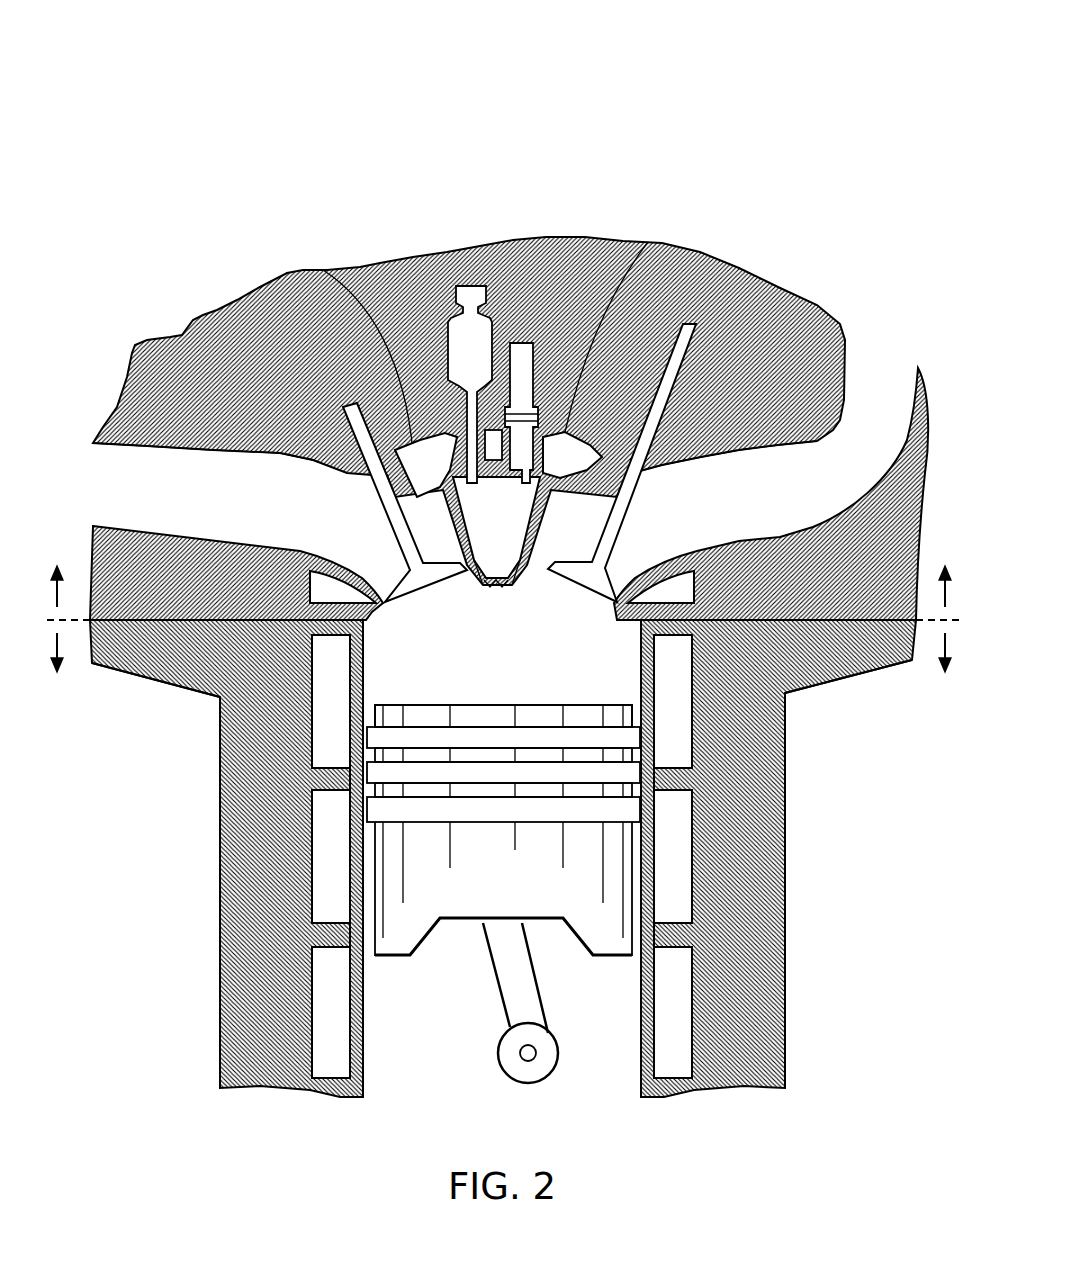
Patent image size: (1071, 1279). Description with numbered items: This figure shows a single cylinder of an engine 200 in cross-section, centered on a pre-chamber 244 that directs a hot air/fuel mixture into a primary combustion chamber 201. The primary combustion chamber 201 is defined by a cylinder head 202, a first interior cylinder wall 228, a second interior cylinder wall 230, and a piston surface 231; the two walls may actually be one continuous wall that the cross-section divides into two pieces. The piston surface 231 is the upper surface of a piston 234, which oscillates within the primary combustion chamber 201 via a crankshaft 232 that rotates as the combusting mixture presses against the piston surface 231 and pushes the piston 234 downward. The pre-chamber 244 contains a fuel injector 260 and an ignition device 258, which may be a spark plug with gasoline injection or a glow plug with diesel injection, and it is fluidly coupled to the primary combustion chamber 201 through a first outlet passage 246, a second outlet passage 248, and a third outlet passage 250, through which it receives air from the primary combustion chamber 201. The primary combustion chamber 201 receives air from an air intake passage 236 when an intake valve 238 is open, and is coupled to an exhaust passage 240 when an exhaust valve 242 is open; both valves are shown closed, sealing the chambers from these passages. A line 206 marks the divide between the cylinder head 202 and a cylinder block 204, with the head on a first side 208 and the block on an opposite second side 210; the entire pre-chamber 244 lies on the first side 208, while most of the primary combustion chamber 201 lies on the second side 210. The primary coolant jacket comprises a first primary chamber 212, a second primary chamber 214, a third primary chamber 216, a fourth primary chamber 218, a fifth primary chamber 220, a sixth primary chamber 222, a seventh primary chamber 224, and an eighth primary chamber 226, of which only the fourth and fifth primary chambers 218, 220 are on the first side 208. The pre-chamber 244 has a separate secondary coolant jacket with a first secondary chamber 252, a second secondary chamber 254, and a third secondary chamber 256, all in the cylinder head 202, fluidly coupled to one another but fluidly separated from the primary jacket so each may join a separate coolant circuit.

The engine 200 is at (503, 576).
The primary combustion chamber 201 is at (518, 684).
The cylinder head 202 is at (173, 336).
The cylinder block 204 is at (220, 870).
The line 206 is at (82, 623).
The first side 208 is at (67, 603).
The second side 210 is at (80, 630).
The first primary chamber 212 is at (303, 1065).
The second primary chamber 214 is at (308, 888).
The third primary chamber 216 is at (310, 752).
The fourth primary chamber 218 is at (308, 578).
The fifth primary chamber 220 is at (700, 578).
The sixth primary chamber 222 is at (695, 752).
The seventh primary chamber 224 is at (696, 885).
The eighth primary chamber 226 is at (700, 1050).
The first interior cylinder wall 228 is at (363, 1045).
The second interior cylinder wall 230 is at (641, 1048).
The piston surface 231 is at (440, 704).
The crankshaft 232 is at (500, 1060).
The piston 234 is at (467, 912).
The air intake passage 236 is at (790, 502).
The intake valve 238 is at (602, 521).
The exhaust passage 240 is at (248, 502).
The exhaust valve 242 is at (397, 520).
The pre-chamber 244 is at (516, 520).
The first outlet passage 246 is at (488, 585).
The second outlet passage 248 is at (498, 590).
The third outlet passage 250 is at (507, 587).
The first secondary chamber 252 is at (322, 268).
The second secondary chamber 254 is at (507, 340).
The third secondary chamber 256 is at (654, 247).
The ignition device 258 is at (538, 404).
The fuel injector 260 is at (457, 295).